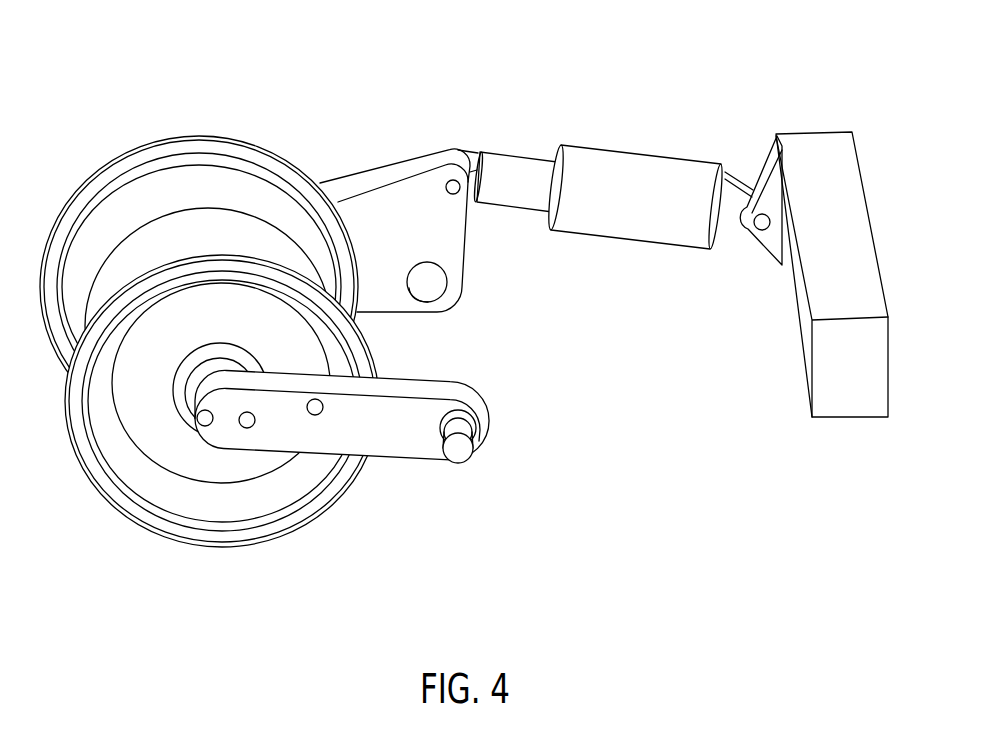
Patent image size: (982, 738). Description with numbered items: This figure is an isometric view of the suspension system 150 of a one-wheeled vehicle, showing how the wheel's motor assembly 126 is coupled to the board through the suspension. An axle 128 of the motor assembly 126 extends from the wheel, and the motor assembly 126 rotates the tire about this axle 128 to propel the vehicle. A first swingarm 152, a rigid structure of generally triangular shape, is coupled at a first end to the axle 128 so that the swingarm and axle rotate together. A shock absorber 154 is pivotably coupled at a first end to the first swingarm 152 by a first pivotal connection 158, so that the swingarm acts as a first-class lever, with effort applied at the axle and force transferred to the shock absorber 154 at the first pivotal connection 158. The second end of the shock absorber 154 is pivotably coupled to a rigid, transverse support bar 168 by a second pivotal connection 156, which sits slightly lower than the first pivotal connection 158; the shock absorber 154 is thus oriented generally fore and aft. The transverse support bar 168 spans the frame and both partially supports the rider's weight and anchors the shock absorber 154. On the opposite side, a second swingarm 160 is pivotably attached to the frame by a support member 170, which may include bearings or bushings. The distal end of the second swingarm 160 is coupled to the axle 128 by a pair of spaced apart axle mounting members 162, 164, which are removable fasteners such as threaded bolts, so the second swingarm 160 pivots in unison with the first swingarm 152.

The motor assembly 126 is at (209, 372).
The axle 128 is at (216, 366).
The suspension system 150 is at (240, 58).
The first swingarm 152 is at (399, 215).
The shock absorber 154 is at (645, 140).
The second pivotal connection 156 is at (760, 230).
The first pivotal connection 158 is at (449, 193).
The second swingarm 160 is at (332, 445).
The axle mounting member 162 is at (201, 425).
The axle mounting member 164 is at (243, 428).
The transverse support bar 168 is at (842, 387).
The support member 170 is at (466, 461).